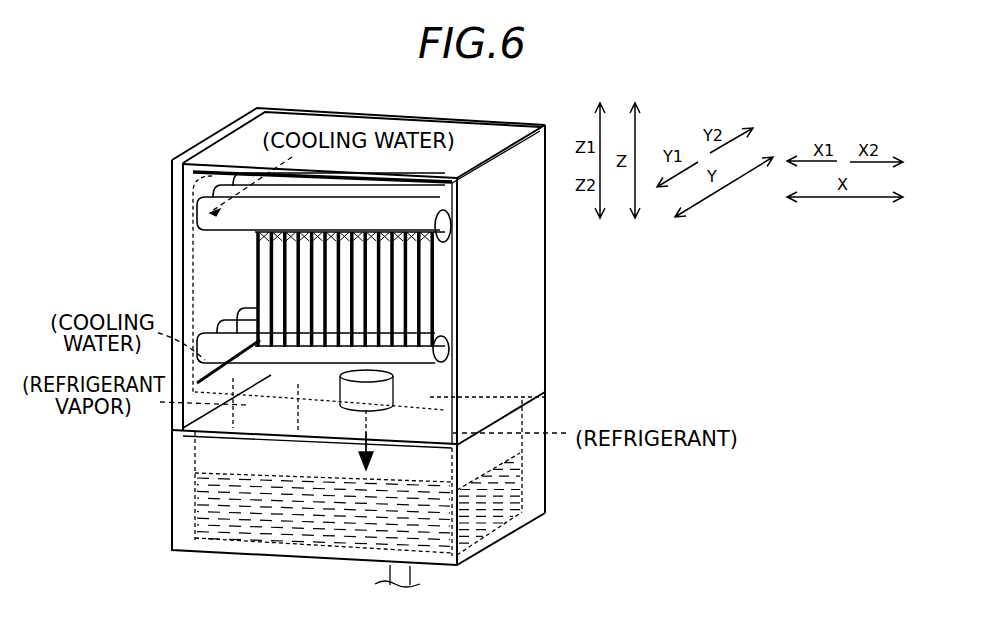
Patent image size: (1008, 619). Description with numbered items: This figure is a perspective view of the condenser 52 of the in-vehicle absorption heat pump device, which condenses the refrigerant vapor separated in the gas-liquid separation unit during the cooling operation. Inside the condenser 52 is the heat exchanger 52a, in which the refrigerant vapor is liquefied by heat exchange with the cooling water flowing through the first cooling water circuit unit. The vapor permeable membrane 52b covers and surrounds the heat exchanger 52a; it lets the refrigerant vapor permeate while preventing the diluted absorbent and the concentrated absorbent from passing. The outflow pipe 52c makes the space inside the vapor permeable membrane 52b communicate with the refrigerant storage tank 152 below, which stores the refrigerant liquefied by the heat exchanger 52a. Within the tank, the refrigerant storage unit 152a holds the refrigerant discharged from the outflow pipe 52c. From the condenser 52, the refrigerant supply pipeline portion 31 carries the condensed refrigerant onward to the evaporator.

The condenser 52 is at (177, 147).
The heat exchanger 52a is at (255, 263).
The vapor permeable membrane 52b is at (205, 330).
The outflow pipe 52c is at (545, 397).
The refrigerant storage tank 152 is at (168, 462).
The refrigerant storage unit 152a is at (195, 495).
The refrigerant supply pipeline portion 31 is at (388, 567).